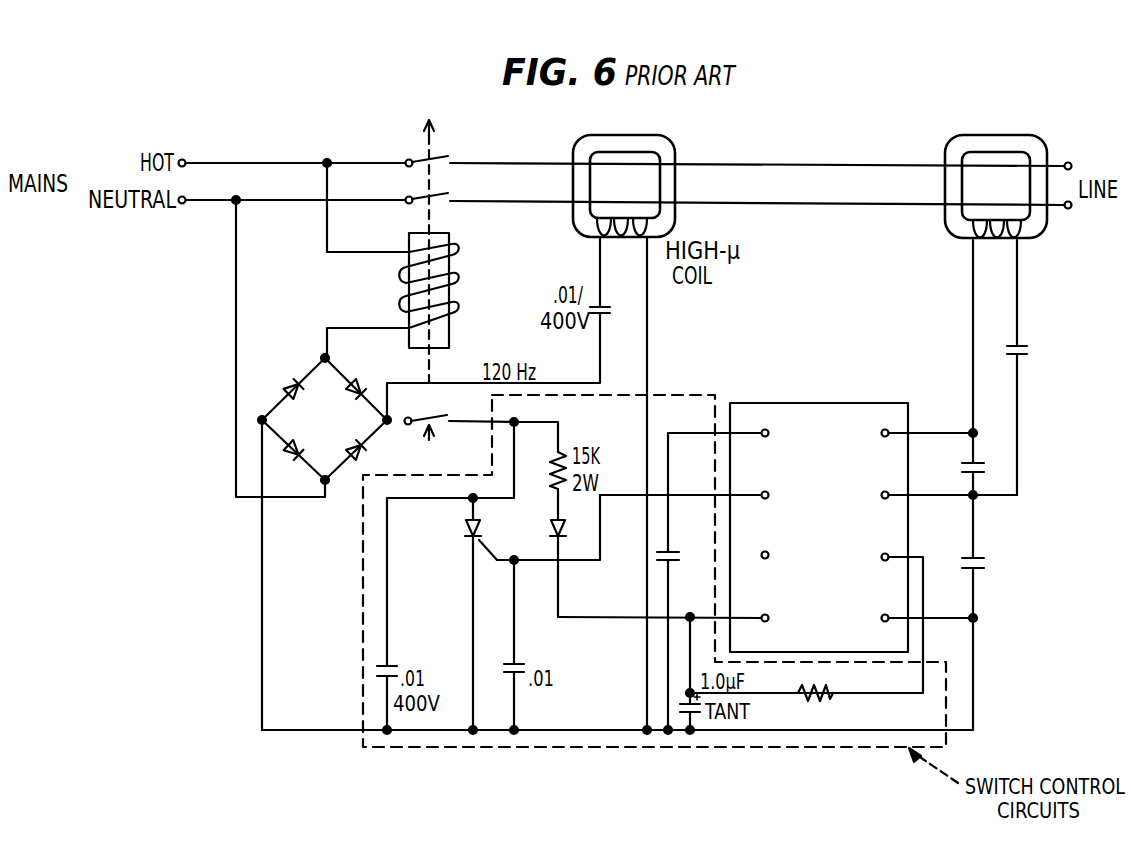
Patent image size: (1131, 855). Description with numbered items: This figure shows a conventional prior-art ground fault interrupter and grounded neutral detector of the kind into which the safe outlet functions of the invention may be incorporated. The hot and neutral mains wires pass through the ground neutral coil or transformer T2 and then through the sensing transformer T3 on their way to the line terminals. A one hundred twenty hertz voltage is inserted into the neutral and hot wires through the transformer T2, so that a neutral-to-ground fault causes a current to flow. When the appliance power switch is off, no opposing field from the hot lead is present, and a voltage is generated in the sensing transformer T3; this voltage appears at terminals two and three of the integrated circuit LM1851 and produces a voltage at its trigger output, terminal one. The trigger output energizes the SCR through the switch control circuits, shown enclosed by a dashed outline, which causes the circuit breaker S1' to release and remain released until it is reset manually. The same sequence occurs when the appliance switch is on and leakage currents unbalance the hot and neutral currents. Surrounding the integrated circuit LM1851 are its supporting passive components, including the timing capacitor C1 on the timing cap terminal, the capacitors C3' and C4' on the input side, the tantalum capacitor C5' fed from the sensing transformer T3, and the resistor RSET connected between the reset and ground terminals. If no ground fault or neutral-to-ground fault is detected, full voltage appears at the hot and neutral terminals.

The ground neutral coil or transformer T2 is at (613, 185).
The sensing transformer T3 is at (982, 186).
The circuit breaker S1' is at (472, 290).
The timing capacitor C1 is at (681, 581).
The capacitor C3' is at (961, 455).
The capacitor C4' is at (997, 561).
The tantalum capacitor C5' is at (1042, 367).
The element SCR is at (512, 612).
The set resistor RSET is at (839, 703).
The integrated circuit LM1851 is at (821, 513).